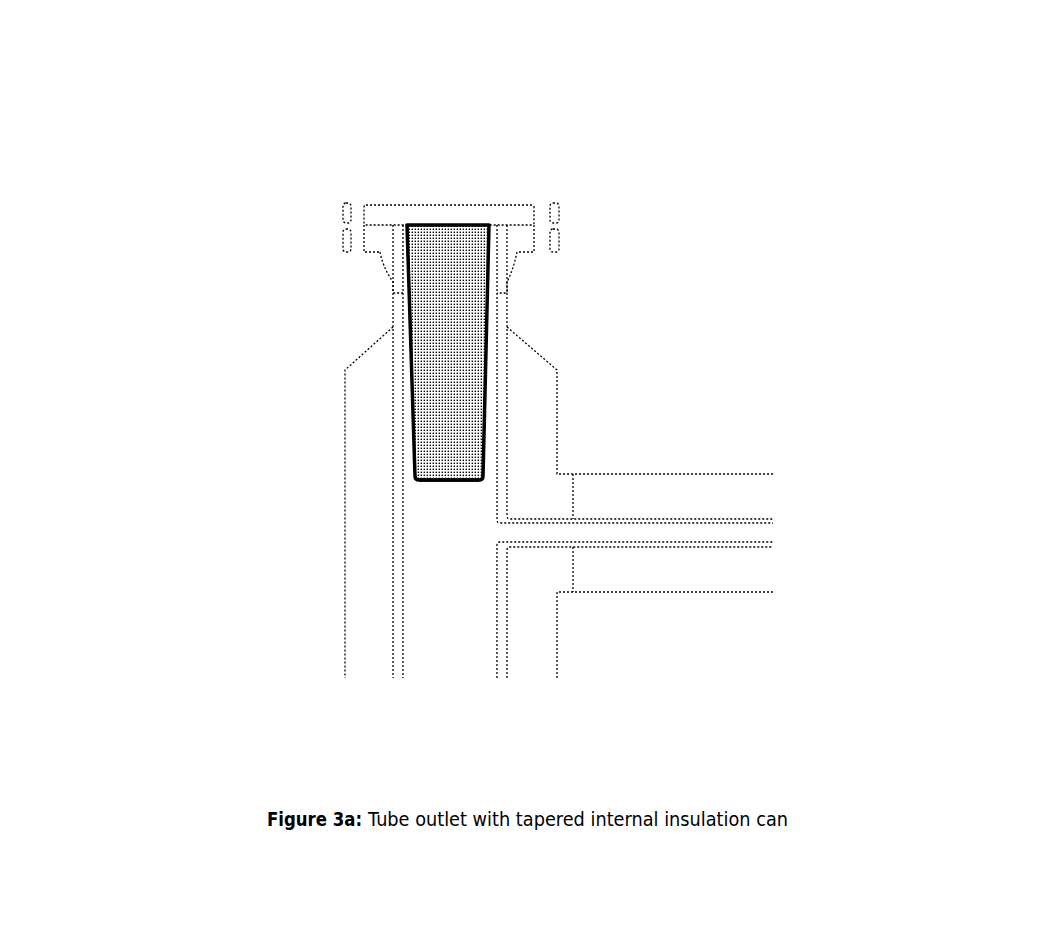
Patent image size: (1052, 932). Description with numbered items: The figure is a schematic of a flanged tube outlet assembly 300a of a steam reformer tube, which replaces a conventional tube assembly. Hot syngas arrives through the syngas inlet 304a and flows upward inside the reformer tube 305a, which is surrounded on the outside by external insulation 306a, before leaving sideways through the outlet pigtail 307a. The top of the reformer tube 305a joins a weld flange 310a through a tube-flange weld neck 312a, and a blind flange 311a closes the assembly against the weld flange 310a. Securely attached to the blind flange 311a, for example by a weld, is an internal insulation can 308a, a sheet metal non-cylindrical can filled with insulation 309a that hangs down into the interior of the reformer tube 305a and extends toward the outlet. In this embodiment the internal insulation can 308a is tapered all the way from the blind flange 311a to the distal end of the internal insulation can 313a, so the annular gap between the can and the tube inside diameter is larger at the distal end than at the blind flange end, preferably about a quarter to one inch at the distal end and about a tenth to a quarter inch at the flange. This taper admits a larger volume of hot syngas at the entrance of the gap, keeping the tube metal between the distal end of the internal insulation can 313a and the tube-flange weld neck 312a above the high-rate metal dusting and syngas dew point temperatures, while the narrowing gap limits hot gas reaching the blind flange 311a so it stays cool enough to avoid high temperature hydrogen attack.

The tube outlet assembly 300a is at (560, 100).
The syngas inlet 304a is at (447, 671).
The reformer tube 305a is at (506, 666).
The external insulation 306a is at (537, 632).
The outlet port 307a is at (550, 521).
The internal insulation can 308a is at (518, 352).
The insulation 309a is at (440, 363).
The weld flange 310a is at (516, 272).
The blind flange 311a is at (517, 211).
The tube/flange weld neck 312a is at (388, 298).
The distal end of internal insulation can 313a is at (440, 485).